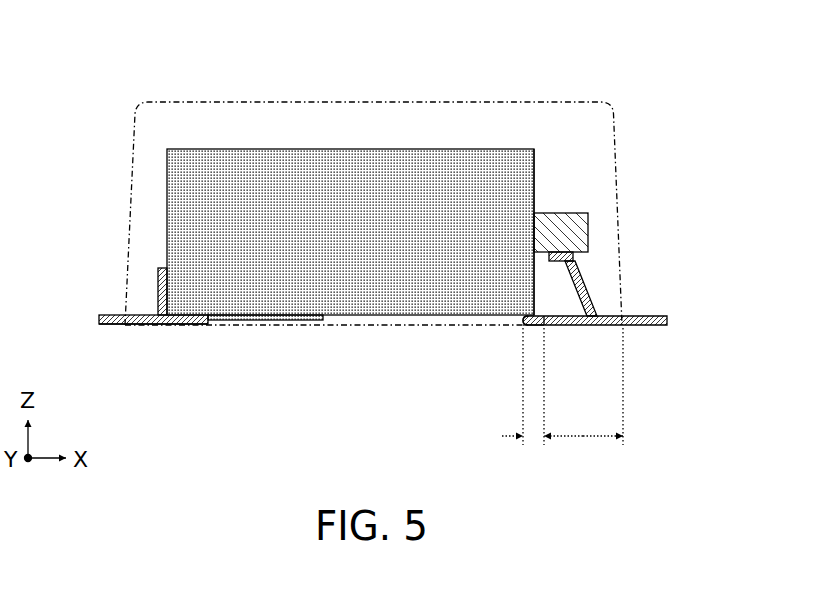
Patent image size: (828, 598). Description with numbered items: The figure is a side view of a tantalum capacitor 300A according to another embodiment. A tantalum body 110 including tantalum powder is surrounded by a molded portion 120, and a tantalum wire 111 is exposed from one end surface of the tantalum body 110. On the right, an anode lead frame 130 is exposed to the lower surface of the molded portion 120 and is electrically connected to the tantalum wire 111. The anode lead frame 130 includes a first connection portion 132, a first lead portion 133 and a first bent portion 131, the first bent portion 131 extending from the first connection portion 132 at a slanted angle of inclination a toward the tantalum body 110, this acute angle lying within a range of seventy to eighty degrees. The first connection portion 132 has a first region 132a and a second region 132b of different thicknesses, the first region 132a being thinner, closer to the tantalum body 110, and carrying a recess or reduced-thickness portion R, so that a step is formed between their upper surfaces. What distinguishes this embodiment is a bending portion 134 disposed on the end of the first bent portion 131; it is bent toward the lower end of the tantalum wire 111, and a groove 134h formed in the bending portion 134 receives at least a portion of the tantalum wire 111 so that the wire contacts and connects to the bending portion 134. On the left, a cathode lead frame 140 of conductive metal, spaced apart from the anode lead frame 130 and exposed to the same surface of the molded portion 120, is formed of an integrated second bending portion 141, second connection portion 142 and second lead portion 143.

The tantalum capacitor 300A is at (142, 31).
The tantalum body 110 is at (261, 149).
The tantalum wire 111 is at (546, 213).
The molded portion 120 is at (373, 102).
The anode lead frame 130 is at (613, 340).
The first bent portion 131 is at (582, 282).
The first connection portion 132 is at (577, 326).
The first region 132a is at (530, 440).
The second region 132b is at (583, 440).
The first lead portion 133 is at (668, 320).
The bending portion 134 is at (557, 252).
The groove 134h is at (585, 250).
The cathode lead frame 140 is at (162, 334).
The second bending portion 141 is at (157, 298).
The second connection portion 142 is at (207, 327).
The second lead portion 143 is at (135, 326).
The reduced-thickness portion R is at (535, 327).
The angle of inclination a is at (556, 326).